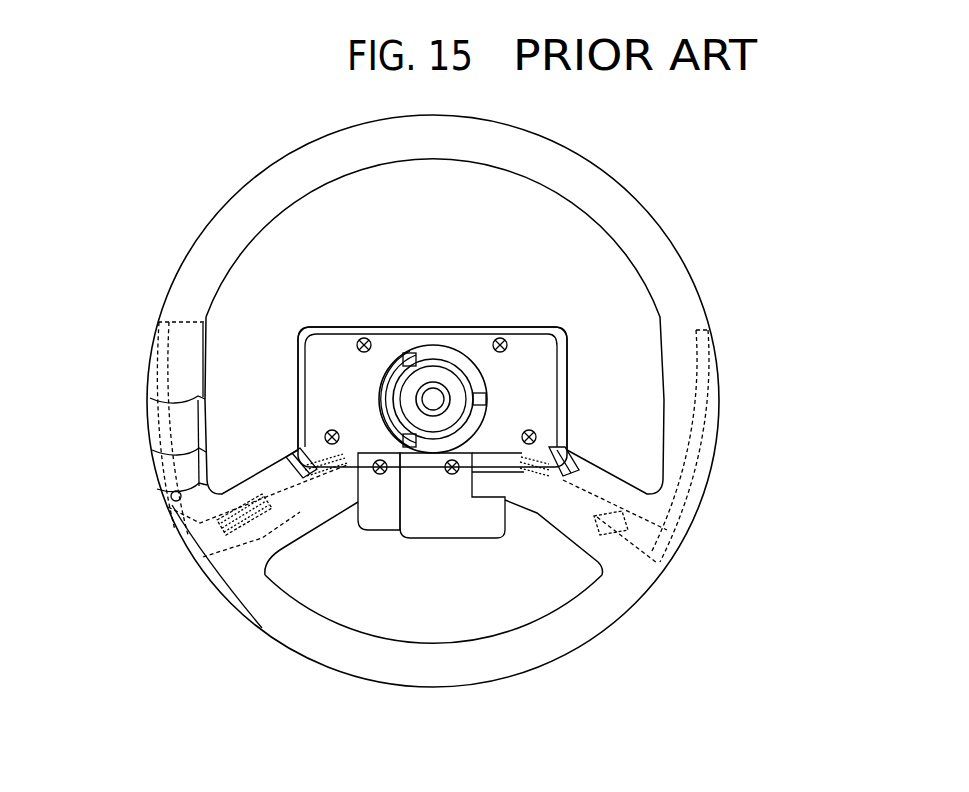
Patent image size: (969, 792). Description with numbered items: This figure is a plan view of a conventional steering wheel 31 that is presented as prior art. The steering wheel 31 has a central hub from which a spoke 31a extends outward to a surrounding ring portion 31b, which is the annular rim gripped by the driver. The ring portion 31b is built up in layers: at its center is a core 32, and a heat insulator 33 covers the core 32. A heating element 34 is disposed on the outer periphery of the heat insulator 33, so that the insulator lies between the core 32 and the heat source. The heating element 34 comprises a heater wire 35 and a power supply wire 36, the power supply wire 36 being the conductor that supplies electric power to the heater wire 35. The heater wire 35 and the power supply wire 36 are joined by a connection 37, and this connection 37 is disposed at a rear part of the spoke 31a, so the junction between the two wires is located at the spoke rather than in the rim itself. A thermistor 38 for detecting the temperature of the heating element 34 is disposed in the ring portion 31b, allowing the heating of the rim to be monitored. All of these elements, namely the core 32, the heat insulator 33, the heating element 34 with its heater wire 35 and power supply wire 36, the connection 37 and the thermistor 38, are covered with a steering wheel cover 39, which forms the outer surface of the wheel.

The steering wheel 31 is at (642, 225).
The spoke 31a is at (293, 520).
The ring portion 31b is at (535, 647).
The core 32 is at (187, 433).
The heat insulator 33 is at (195, 468).
The heating element 34 is at (170, 476).
The heater wire 35 is at (180, 528).
The power supply wire 36 is at (322, 455).
The connection 37 is at (253, 533).
The thermistor 38 is at (168, 505).
The steering wheel cover 39 is at (188, 360).